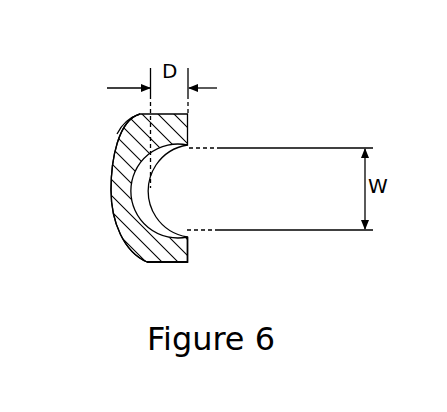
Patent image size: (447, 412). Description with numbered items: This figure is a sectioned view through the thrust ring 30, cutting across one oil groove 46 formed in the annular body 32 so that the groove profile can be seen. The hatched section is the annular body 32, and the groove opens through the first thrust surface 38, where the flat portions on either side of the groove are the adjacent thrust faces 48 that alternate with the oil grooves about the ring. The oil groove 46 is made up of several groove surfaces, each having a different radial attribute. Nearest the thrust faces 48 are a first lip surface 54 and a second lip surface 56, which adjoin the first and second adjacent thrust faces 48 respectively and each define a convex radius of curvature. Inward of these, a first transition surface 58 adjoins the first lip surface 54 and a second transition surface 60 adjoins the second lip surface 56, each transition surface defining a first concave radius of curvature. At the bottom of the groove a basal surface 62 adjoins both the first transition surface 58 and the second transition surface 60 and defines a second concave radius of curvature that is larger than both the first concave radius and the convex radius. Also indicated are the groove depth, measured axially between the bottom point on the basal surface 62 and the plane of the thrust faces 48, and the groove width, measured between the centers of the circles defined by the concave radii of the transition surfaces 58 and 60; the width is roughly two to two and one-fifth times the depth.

The thrust ring 30 is at (64, 182).
The oil groove 46 is at (122, 129).
The annular body 32 is at (120, 217).
The basal surface 62 is at (159, 193).
The first transition surface 58 is at (176, 151).
The second transition surface 60 is at (174, 227).
The first lip surface 54 is at (189, 148).
The second lip surface 56 is at (186, 230).
The first thrust surface 38 is at (192, 257).
The thrust faces 48 is at (167, 249).